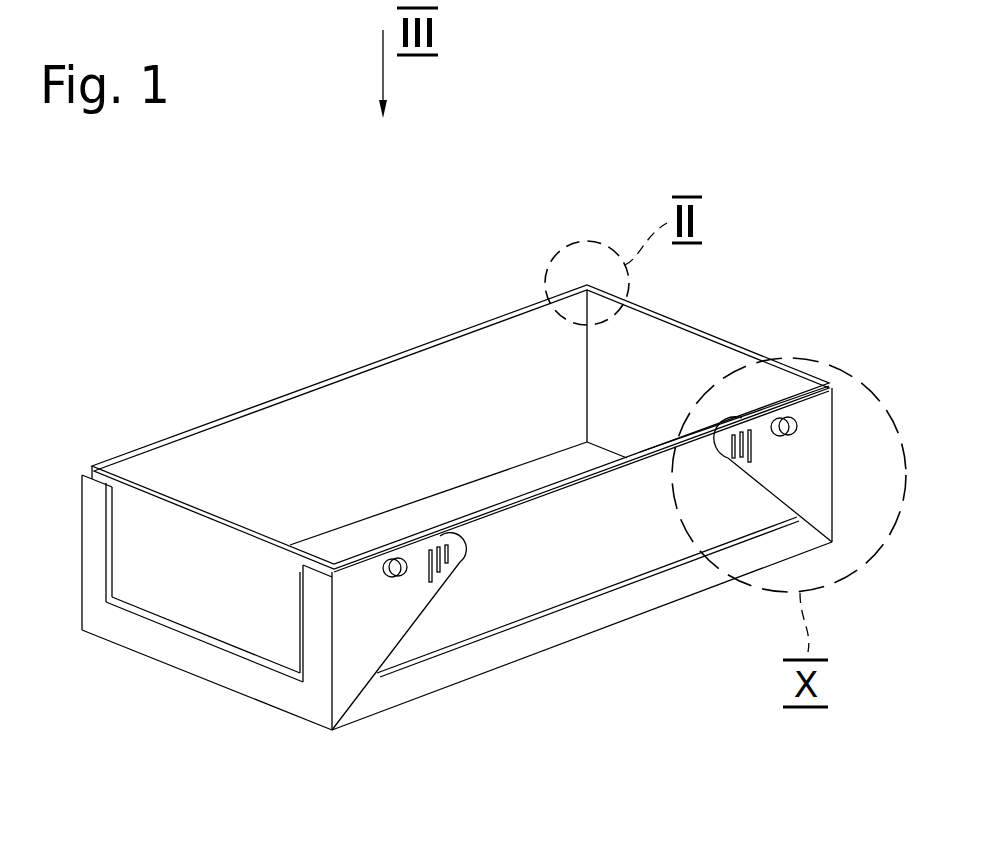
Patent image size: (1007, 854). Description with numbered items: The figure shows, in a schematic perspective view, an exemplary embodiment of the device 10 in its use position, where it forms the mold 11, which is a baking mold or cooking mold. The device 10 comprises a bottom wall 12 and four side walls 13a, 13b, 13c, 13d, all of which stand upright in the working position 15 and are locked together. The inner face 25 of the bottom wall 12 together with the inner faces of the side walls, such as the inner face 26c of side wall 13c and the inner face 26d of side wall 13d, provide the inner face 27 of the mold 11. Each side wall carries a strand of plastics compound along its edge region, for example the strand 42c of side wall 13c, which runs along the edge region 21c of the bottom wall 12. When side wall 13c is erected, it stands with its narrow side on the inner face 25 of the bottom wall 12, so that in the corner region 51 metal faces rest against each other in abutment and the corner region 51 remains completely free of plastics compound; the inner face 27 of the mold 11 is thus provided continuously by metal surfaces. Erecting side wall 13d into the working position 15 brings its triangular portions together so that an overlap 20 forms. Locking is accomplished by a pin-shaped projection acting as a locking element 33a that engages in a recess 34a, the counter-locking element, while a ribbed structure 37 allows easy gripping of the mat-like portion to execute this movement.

The device 10 is at (478, 213).
The mold 11 is at (226, 380).
The bottom wall 12 is at (478, 498).
The side wall 13a is at (538, 565).
The side wall 13b is at (240, 610).
The side wall 13c is at (380, 395).
The side wall 13d is at (715, 364).
The working position 15 is at (815, 250).
The overlap 20 is at (796, 380).
The edge region of the bottom wall 21c is at (411, 511).
The inner face of the bottom wall 25 is at (527, 482).
The inner face of side wall 26c is at (279, 453).
The inner face of side wall 26d is at (660, 375).
The inner face of the mold 27 is at (329, 475).
The locking element 33a is at (788, 434).
The recess 34a is at (797, 418).
The ribbed structure 37 is at (733, 455).
The strand of plastics compound 42c is at (455, 662).
The corner region 51 is at (365, 505).